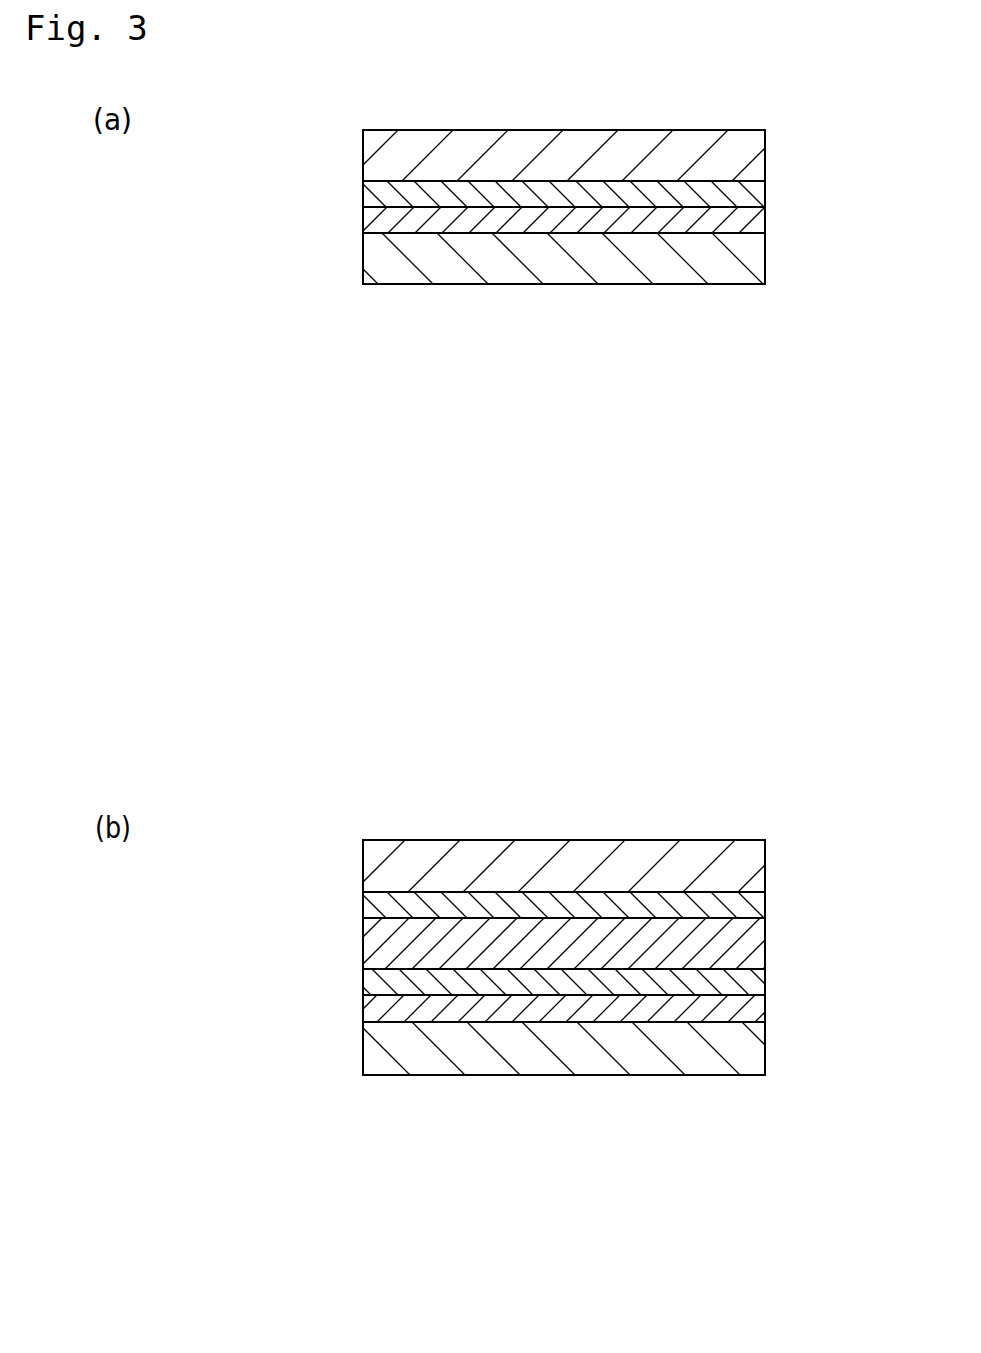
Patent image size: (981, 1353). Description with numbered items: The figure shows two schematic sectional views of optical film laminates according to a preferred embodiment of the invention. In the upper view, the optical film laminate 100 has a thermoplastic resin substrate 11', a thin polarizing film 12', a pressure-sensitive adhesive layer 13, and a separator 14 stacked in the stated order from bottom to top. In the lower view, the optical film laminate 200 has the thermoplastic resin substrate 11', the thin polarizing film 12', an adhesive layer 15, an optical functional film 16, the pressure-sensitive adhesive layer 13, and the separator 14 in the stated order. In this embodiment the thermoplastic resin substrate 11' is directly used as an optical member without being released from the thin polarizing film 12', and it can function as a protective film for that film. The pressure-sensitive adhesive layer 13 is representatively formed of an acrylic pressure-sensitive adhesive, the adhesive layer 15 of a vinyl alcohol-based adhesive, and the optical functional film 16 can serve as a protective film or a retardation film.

The optical film laminate 100 is at (757, 63).
The optical film laminate 200 is at (765, 779).
The separator 14 is at (755, 152).
The pressure-sensitive adhesive layer 13 is at (757, 195).
The optical functional film 16 is at (757, 948).
The adhesive layer 15 is at (757, 982).
The thin polarizing film 12' is at (616, 640).
The thermoplastic resin substrate 11' is at (604, 691).